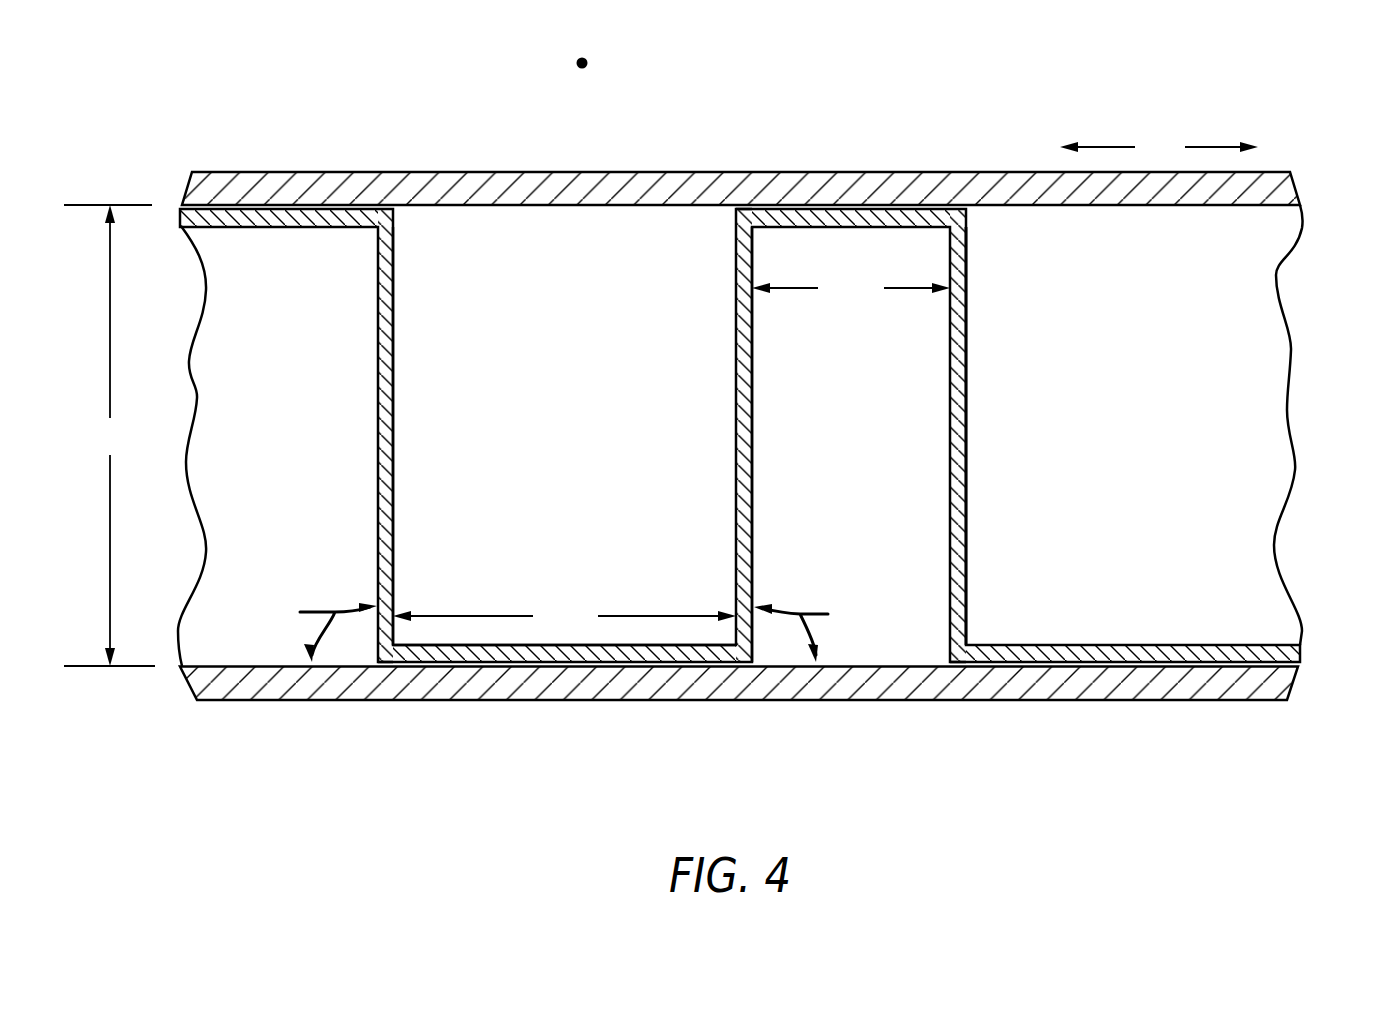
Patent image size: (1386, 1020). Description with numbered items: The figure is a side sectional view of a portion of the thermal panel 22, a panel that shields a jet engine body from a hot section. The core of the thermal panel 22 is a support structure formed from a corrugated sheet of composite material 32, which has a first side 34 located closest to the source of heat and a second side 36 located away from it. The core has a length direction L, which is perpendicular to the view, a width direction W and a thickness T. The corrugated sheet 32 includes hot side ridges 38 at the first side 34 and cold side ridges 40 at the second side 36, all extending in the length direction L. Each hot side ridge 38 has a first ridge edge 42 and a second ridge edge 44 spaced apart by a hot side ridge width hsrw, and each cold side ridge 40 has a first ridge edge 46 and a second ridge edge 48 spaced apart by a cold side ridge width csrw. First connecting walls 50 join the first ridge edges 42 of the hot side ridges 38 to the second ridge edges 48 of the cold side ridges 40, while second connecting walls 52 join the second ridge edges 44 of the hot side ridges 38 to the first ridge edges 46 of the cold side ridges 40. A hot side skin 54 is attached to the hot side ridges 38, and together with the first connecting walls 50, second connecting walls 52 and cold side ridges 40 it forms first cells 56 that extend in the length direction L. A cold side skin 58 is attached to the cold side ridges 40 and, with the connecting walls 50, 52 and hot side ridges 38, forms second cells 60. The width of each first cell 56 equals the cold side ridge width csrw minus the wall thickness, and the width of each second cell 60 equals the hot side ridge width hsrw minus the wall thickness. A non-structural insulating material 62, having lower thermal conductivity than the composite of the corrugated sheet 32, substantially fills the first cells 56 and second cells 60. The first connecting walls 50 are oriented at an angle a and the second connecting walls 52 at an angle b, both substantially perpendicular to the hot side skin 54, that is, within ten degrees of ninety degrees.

The thermal panel 22 is at (832, 125).
The corrugated sheet of composite material 32 is at (968, 350).
The first side of the core 34 is at (511, 665).
The second side of the core 36 is at (296, 210).
The hot side ridges 38 is at (625, 653).
The cold side ridges 40 is at (237, 218).
The first ridge edge of hot side ridge 42 is at (384, 658).
The second ridge edge of hot side ridge 44 is at (745, 665).
The first ridge edge of cold side ridge 46 is at (744, 208).
The second ridge edge of cold side ridge 48 is at (391, 214).
The first connecting walls 50 is at (394, 480).
The second connecting walls 52 is at (753, 478).
The hot side skin 54 is at (1190, 688).
The first cells 56 is at (530, 446).
The cold side skin 58 is at (1286, 190).
The second cells 60 is at (921, 425).
The filler material 62 is at (512, 240).
The length direction L is at (582, 60).
The thickness T is at (109, 435).
The width direction W is at (1159, 147).
The angle a is at (329, 630).
The angle b is at (801, 630).
The cold side ridge width csrw is at (851, 289).
The hot side ridge width hsrw is at (564, 617).